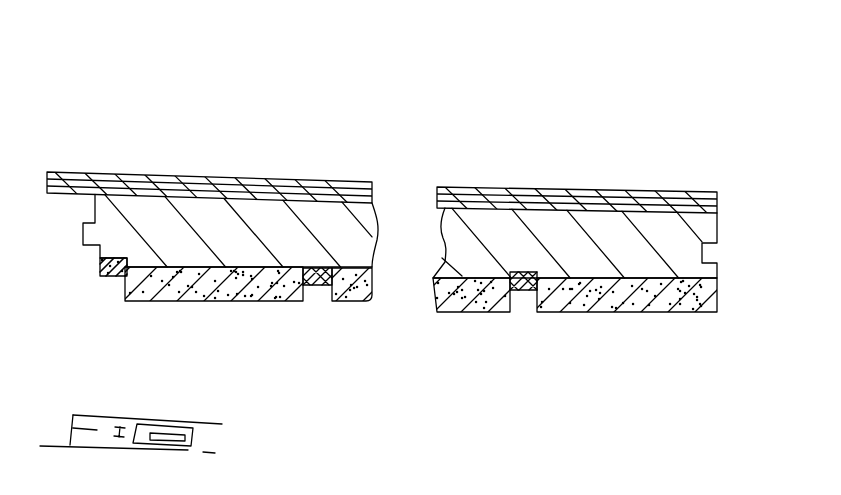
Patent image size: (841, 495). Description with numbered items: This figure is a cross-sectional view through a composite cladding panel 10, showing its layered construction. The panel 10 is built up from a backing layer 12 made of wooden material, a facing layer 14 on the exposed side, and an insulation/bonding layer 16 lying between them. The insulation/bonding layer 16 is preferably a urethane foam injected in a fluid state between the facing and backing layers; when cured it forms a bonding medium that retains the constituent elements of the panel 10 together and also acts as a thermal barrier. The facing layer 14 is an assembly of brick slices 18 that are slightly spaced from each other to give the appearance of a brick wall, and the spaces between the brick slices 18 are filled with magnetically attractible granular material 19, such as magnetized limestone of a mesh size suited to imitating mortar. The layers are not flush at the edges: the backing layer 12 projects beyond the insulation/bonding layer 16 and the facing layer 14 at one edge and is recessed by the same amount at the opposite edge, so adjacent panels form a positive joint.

The panel 10 is at (493, 120).
The backing layer 12 is at (600, 188).
The facing layer 14 is at (583, 300).
The insulation/bonding layer 16 is at (455, 243).
The brick slices 18 is at (238, 276).
The magnetically attractible granular material 19 is at (318, 288).